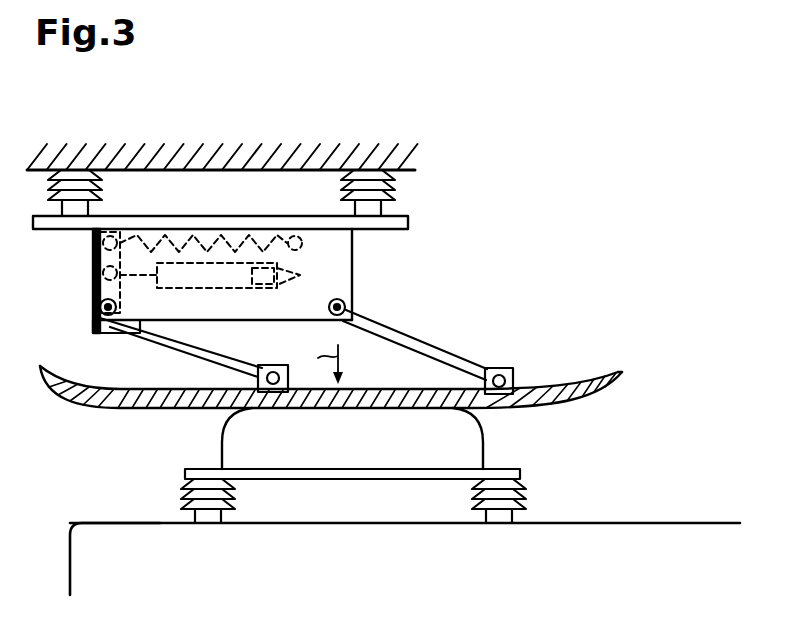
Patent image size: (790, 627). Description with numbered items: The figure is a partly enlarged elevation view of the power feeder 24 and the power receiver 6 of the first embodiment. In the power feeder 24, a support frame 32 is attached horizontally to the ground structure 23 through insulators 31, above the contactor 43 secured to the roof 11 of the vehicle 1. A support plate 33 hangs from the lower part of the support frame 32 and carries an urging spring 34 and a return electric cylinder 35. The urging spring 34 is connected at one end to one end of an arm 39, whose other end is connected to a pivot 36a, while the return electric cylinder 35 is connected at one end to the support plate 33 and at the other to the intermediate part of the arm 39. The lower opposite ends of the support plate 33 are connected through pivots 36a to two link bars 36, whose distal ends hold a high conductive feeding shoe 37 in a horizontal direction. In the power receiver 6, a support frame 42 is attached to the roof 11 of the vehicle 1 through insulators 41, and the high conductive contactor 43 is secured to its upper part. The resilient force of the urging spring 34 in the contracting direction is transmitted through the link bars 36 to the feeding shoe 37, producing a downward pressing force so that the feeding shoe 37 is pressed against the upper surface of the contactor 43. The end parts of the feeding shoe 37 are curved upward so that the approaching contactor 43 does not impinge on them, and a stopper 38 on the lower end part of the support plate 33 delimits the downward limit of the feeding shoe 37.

The vehicle 1 is at (368, 569).
The power receiver 6 is at (497, 448).
The roof 11 is at (104, 522).
The ground structure 23 is at (262, 144).
The power feeder 24 is at (442, 211).
The insulators 31 is at (396, 196).
The support frame 32 is at (114, 222).
The support plate 33 is at (92, 255).
The urging spring 34 is at (305, 244).
The return electric cylinder 35 is at (305, 275).
The link bars 36 is at (174, 344).
The pivots 36a is at (98, 308).
The feeding shoe 37 is at (624, 376).
The stopper 38 is at (110, 334).
The arm 39 is at (92, 282).
The insulators 41 is at (526, 496).
The support frame 42 is at (248, 476).
The contactor 43 is at (320, 455).